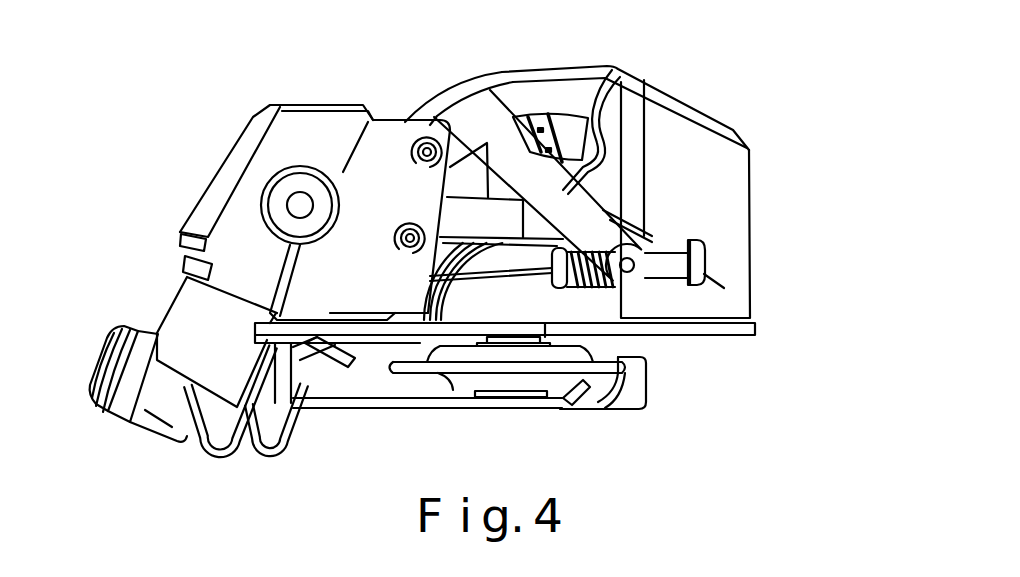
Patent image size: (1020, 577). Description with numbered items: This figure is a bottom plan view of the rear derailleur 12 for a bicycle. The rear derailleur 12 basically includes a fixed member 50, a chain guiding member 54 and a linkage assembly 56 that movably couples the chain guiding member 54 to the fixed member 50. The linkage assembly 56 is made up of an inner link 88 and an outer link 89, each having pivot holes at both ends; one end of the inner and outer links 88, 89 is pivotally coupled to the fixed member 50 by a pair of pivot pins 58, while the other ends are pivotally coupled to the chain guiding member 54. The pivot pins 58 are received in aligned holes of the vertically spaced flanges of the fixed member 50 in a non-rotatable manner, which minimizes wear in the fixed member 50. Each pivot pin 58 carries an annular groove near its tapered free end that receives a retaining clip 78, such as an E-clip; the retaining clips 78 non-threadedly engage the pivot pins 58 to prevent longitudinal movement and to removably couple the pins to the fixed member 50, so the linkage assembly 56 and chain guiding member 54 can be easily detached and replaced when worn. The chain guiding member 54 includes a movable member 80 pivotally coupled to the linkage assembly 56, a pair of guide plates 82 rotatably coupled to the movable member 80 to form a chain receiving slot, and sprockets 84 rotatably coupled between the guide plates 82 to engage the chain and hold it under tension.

The rear derailleur 12 is at (716, 38).
The fixed member 50 is at (318, 103).
The chain guiding member 54 is at (765, 158).
The linkage assembly 56 is at (534, 74).
The pivot pins 58 is at (427, 161).
The retaining clips 78 is at (414, 149).
The movable member 80 is at (753, 225).
The guide plates 82 is at (383, 337).
The sprockets 84 is at (453, 390).
The inner link 88 is at (502, 272).
The outer link 89 is at (450, 84).